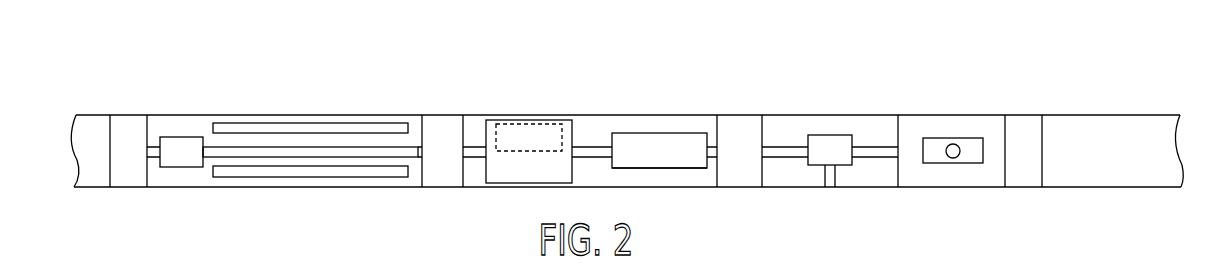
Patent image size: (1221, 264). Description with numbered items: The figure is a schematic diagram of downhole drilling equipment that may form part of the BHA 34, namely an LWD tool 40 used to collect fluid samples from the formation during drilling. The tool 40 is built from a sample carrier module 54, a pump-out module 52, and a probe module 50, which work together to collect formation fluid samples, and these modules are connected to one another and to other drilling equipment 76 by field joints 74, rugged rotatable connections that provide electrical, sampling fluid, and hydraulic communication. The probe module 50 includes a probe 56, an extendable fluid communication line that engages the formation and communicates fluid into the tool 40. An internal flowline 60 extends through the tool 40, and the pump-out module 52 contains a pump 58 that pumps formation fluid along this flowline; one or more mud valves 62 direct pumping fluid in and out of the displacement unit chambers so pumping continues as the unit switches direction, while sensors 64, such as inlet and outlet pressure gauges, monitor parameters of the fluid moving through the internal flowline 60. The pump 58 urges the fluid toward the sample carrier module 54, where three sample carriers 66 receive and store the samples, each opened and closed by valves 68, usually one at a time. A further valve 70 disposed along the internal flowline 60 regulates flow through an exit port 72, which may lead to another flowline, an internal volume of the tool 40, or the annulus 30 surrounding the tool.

The annulus 30 is at (1108, 222).
The BHA 34 is at (1070, 62).
The LWD tool 40 is at (1005, 110).
The probe module 50 is at (1005, 212).
The pump-out module 52 is at (652, 115).
The sample carrier module 54 is at (352, 115).
The probe 56 is at (950, 121).
The pump 58 is at (527, 120).
The internal flowline 60 is at (150, 183).
The mud valve 62 is at (489, 124).
The sensors 64 is at (658, 168).
The sample carriers 66 is at (368, 134).
The valves 68 is at (178, 168).
The valve 70 is at (860, 135).
The exit port 72 is at (838, 170).
The field joints 74 is at (117, 172).
The other drilling equipment 76 is at (93, 115).